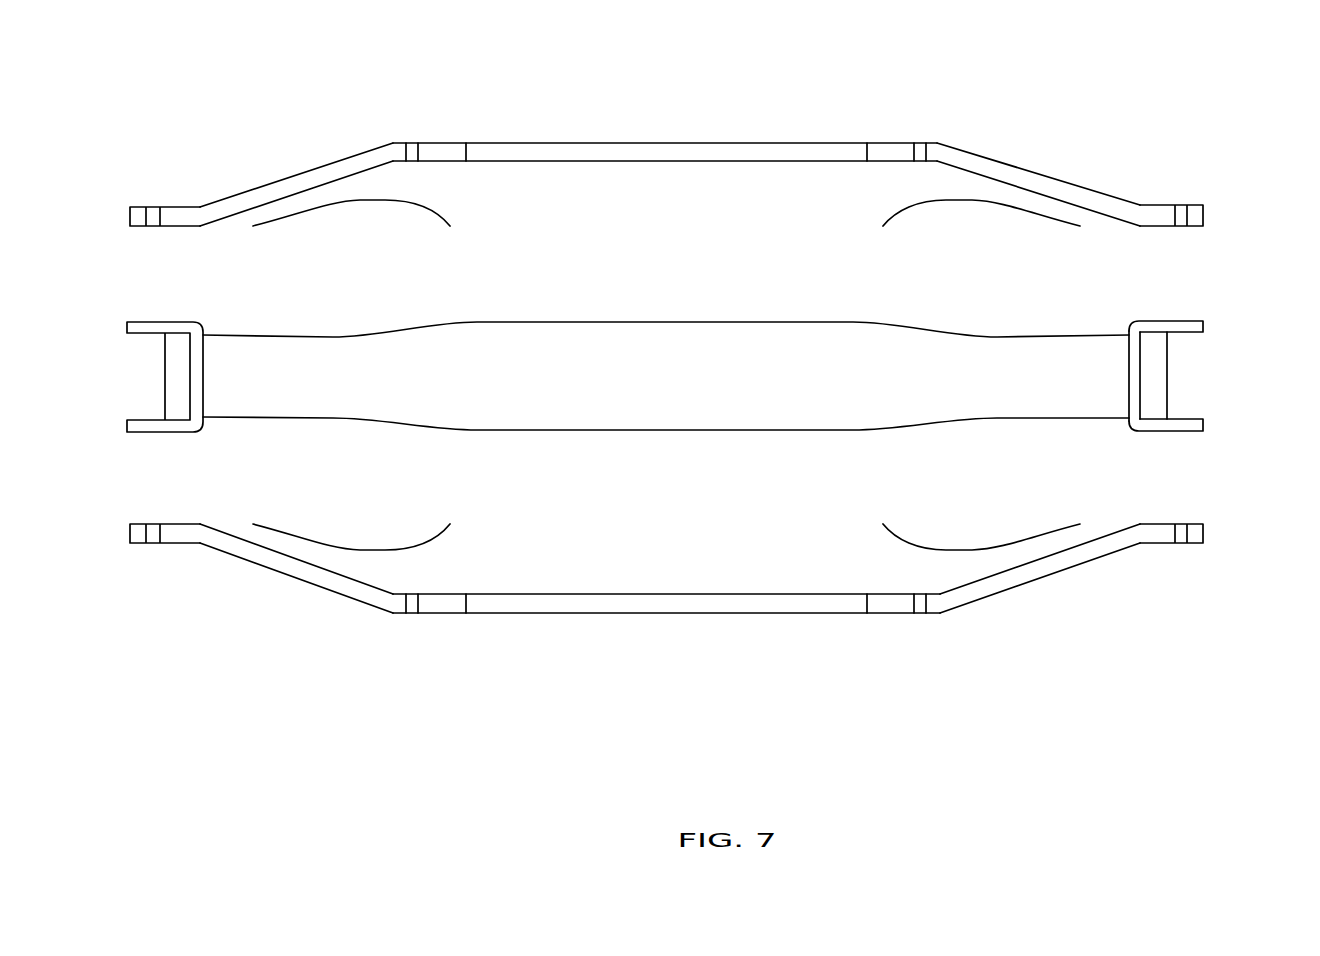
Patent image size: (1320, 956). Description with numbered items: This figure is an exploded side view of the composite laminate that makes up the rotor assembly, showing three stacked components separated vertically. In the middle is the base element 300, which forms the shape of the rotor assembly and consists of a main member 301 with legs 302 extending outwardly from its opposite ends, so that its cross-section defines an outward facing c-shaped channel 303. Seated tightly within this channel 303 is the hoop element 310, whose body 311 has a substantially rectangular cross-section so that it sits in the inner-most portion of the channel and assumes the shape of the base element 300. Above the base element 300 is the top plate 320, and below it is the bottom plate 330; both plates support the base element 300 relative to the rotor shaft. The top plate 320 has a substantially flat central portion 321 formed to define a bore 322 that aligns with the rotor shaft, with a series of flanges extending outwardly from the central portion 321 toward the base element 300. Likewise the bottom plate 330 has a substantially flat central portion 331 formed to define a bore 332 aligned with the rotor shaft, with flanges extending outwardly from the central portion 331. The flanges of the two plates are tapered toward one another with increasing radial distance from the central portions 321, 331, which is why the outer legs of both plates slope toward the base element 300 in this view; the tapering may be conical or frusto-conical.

The base element 300 is at (702, 370).
The main member 301 is at (995, 418).
The legs 302 is at (1212, 326).
The outward facing c-shaped channel 303 is at (1210, 414).
The hoop element 310 is at (1175, 368).
The body 311 is at (1152, 348).
The top plate 320 is at (666, 129).
The central portion 321 is at (894, 138).
The bore 322 is at (594, 150).
The bottom plate 330 is at (666, 640).
The central portion 331 is at (903, 623).
The bore 332 is at (736, 622).